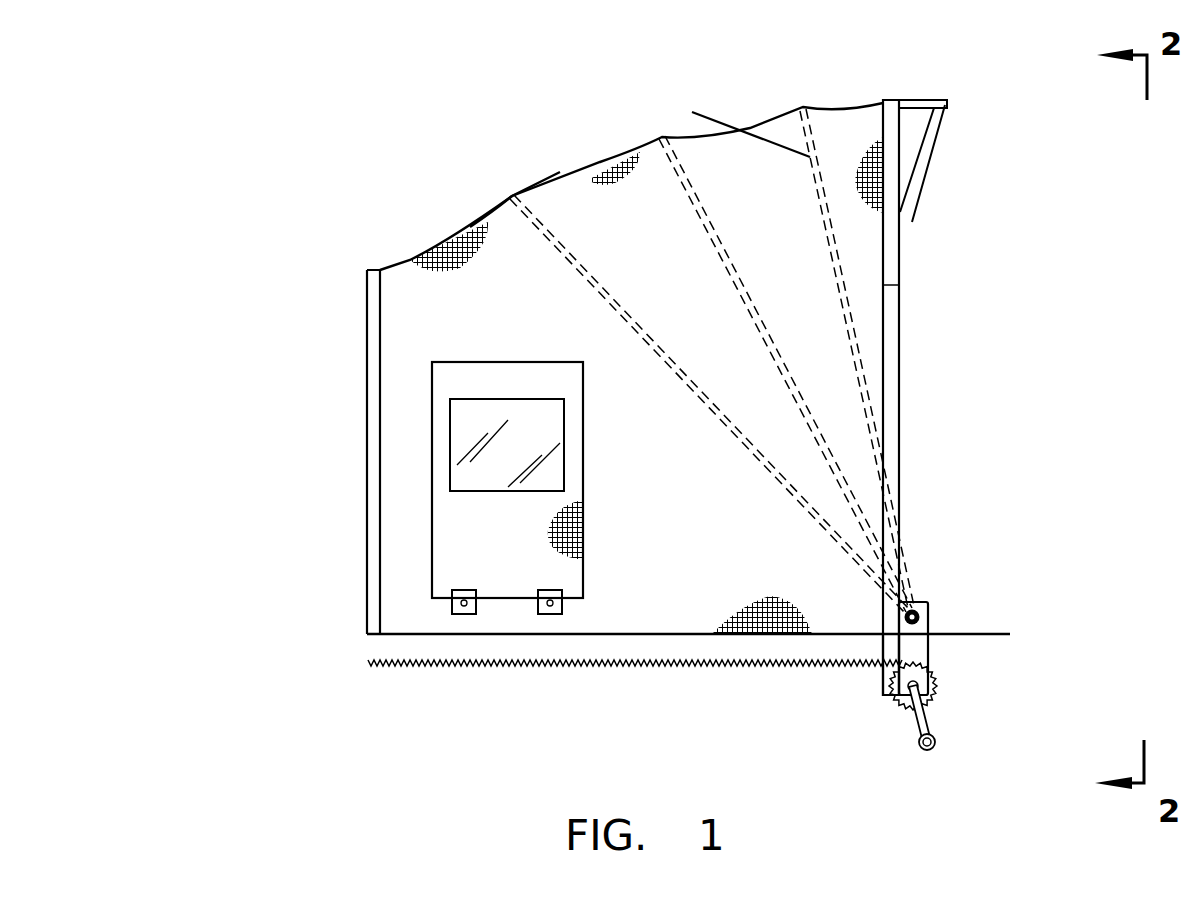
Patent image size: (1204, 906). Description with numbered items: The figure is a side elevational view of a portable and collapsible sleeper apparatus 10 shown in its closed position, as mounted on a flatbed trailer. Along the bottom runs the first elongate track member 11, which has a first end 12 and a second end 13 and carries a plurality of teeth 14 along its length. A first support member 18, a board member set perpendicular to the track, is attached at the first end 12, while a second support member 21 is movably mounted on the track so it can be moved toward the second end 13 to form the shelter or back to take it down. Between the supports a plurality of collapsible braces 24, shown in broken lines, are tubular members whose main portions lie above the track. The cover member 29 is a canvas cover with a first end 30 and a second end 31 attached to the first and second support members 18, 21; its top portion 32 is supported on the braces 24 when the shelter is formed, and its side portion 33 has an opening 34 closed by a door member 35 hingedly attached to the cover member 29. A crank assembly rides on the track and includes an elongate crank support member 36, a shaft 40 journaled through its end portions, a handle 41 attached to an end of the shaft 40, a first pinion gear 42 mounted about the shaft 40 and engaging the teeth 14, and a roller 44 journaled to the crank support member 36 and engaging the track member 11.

The portable and collapsible sleeper apparatus 10 is at (948, 62).
The first elongate track member 11 is at (578, 647).
The first end of the first elongate track member 12 is at (372, 650).
The second end of the first elongate track member 13 is at (873, 652).
The teeth 14 is at (668, 667).
The first support member 18 is at (368, 493).
The second support member 21 is at (900, 345).
The collapsible braces 24 is at (713, 222).
The cover member 29 is at (408, 276).
The first end of the cover member 30 is at (378, 383).
The second end of the cover member 31 is at (899, 285).
The top portion of the cover member 32 is at (502, 217).
The side portion of the cover member 33 is at (406, 550).
The opening 34 is at (592, 528).
The door member 35 is at (512, 570).
The elongate crank support member 36 is at (923, 626).
The shaft 40 is at (900, 698).
The handle 41 is at (933, 750).
The first pinion gear 42 is at (940, 688).
The roller 44 is at (915, 603).